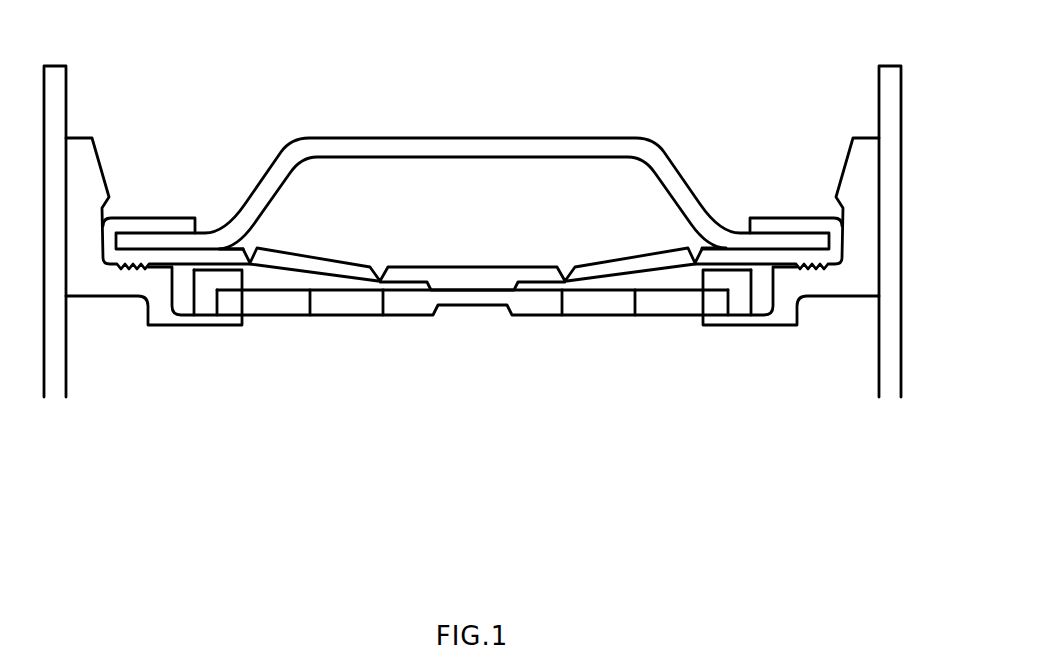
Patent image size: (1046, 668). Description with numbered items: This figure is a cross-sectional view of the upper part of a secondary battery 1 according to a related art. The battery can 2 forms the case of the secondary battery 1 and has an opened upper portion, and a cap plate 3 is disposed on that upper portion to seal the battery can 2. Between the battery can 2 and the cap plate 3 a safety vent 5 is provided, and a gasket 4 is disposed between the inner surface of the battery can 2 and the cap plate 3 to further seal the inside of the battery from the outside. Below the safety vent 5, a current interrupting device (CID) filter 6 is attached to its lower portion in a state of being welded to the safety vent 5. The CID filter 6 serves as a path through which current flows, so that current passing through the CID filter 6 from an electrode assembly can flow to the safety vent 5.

The secondary battery 1 is at (548, 78).
The battery can 2 is at (895, 222).
The cap plate 3 is at (366, 146).
The gasket 4 is at (81, 149).
The safety vent 5 is at (455, 266).
The current interrupting device (CID) filter 6 is at (347, 305).